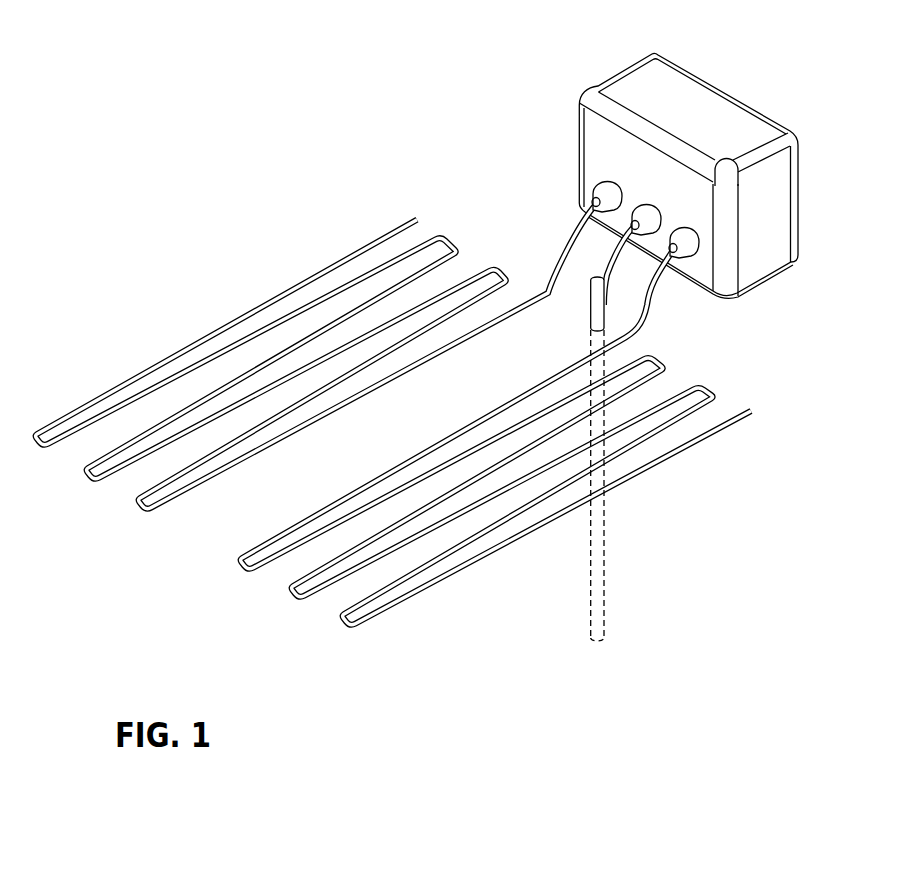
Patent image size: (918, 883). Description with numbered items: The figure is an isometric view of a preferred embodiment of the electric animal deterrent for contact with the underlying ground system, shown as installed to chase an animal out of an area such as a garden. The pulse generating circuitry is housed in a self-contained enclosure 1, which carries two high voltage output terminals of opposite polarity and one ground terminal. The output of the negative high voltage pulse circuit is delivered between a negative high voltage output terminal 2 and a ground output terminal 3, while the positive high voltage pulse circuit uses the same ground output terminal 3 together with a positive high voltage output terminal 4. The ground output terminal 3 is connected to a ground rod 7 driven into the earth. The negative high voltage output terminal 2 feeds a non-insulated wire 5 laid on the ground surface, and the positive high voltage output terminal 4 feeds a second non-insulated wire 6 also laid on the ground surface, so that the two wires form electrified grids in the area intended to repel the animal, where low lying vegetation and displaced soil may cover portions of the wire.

The enclosure 1 is at (638, 87).
The negative high voltage output terminal 2 is at (596, 200).
The ground output terminal 3 is at (633, 225).
The positive high voltage output terminal 4 is at (676, 253).
The non-insulated wire 5 is at (260, 302).
The non-insulated wire 6 is at (668, 462).
The ground rod 7 is at (588, 312).